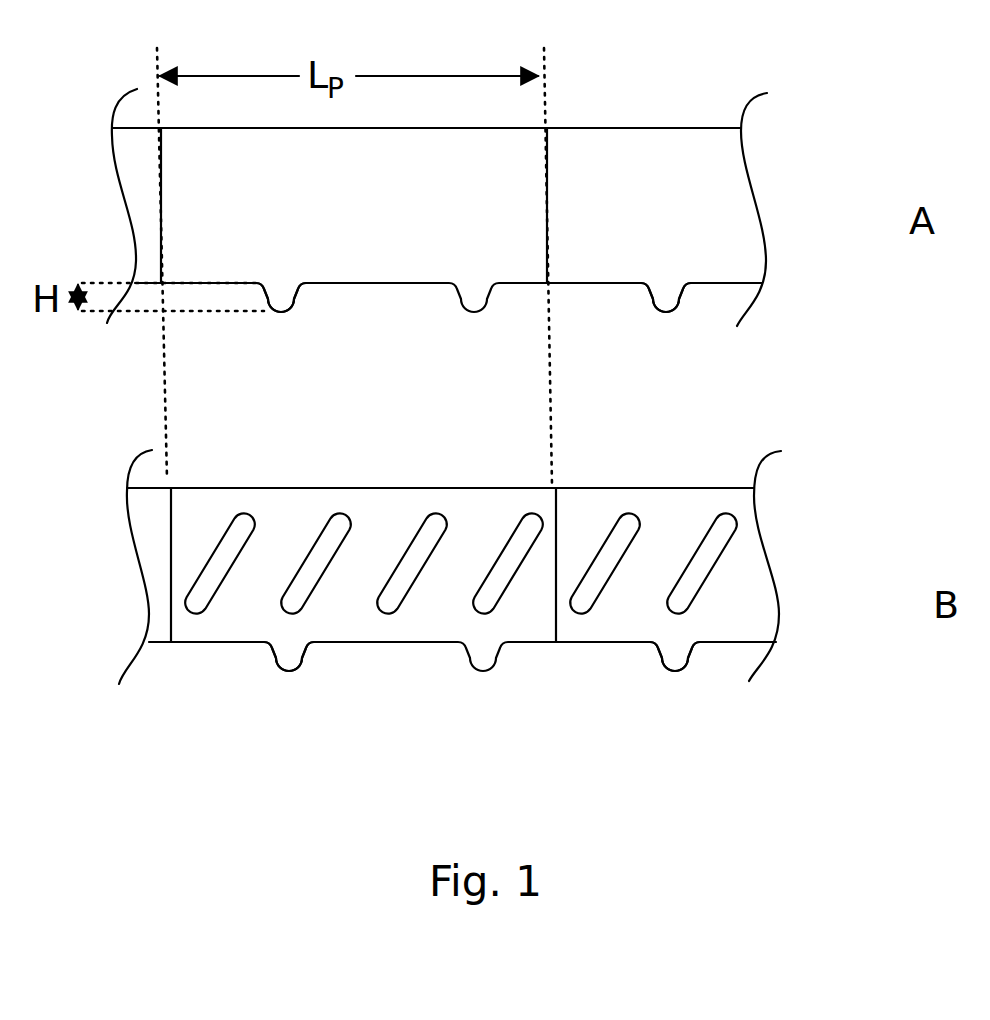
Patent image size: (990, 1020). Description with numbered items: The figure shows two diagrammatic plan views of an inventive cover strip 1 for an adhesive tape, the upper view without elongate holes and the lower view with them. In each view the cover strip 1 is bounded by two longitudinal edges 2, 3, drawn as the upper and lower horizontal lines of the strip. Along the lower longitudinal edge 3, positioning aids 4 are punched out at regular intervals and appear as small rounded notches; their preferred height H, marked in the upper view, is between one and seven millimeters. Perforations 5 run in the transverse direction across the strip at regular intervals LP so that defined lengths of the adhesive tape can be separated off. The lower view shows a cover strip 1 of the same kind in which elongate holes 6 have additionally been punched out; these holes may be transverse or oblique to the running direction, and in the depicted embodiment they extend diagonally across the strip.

In FIG. 1A, the fin strip 1 is at (790, 235).
In FIG. 1B, the fin strip 1 is at (797, 606).
In FIG. 1A, the longitudinal edge 2 is at (635, 127).
In FIG. 1B, the longitudinal edge 2 is at (420, 480).
In FIG. 1A, the longitudinal edge 3 is at (412, 285).
In FIG. 1B, the longitudinal edge 3 is at (210, 641).
In FIG. 1A, the positioning aid 4 is at (281, 298).
In FIG. 1B, the positioning aid 4 is at (293, 657).
In FIG. 1A, the perforation 5 is at (162, 237).
In FIG. 1B, the perforation 5 is at (557, 527).
In FIG. 1B, the elongate hole 6 is at (697, 570).